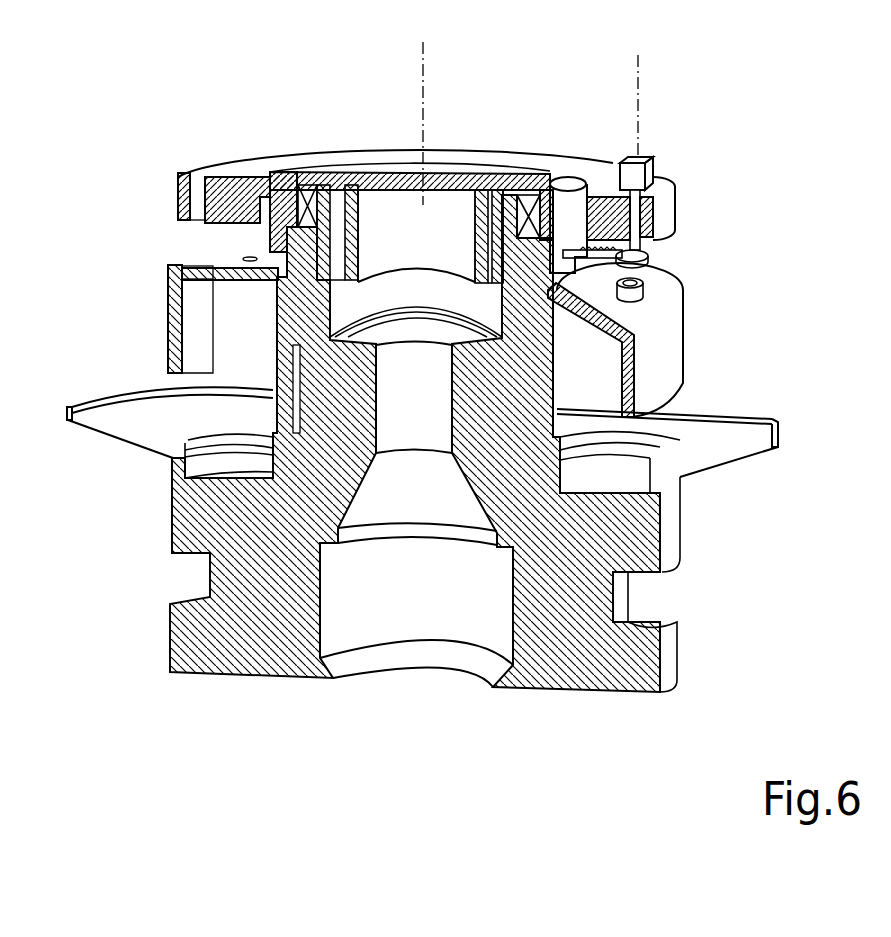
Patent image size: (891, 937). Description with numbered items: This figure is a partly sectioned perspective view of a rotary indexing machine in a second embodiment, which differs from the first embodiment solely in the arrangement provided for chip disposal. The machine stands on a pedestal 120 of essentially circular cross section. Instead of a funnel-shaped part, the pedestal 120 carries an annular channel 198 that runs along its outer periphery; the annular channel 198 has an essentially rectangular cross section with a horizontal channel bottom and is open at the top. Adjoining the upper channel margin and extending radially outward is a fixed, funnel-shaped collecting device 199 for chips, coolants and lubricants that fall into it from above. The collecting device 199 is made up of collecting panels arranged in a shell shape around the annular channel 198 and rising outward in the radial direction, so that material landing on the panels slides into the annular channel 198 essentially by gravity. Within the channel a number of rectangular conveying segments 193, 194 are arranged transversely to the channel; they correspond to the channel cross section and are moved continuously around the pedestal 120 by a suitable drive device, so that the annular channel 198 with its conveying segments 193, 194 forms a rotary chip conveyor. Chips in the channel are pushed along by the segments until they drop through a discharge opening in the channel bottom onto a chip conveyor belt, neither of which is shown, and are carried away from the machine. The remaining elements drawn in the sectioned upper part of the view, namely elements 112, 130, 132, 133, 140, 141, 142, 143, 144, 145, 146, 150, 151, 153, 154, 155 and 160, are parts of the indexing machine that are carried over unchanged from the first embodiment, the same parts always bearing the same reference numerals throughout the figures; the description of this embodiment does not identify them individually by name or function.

The central axis 112 is at (423, 33).
The pedestal 120 is at (670, 577).
The housing 130 is at (165, 312).
The drum wall 132 is at (637, 372).
The sleeve 133 is at (508, 185).
The cap 140 is at (232, 158).
The bearing rings 141 is at (300, 172).
The cap wall 142 is at (337, 175).
The bearing 143 is at (357, 175).
The inner bar 144 is at (385, 178).
The cap plate 145 is at (177, 200).
The central bore 146 is at (437, 217).
The bolt 150 is at (668, 157).
The clamp block 151 is at (640, 217).
The clamp plate 153 is at (647, 258).
The post 154 is at (571, 190).
The bolt axis 155 is at (638, 67).
The screw 160 is at (655, 295).
The conveying segment 193 is at (265, 470).
The conveying segment 194 is at (625, 527).
The annular channel 198 is at (223, 478).
The collecting device 199 is at (138, 417).